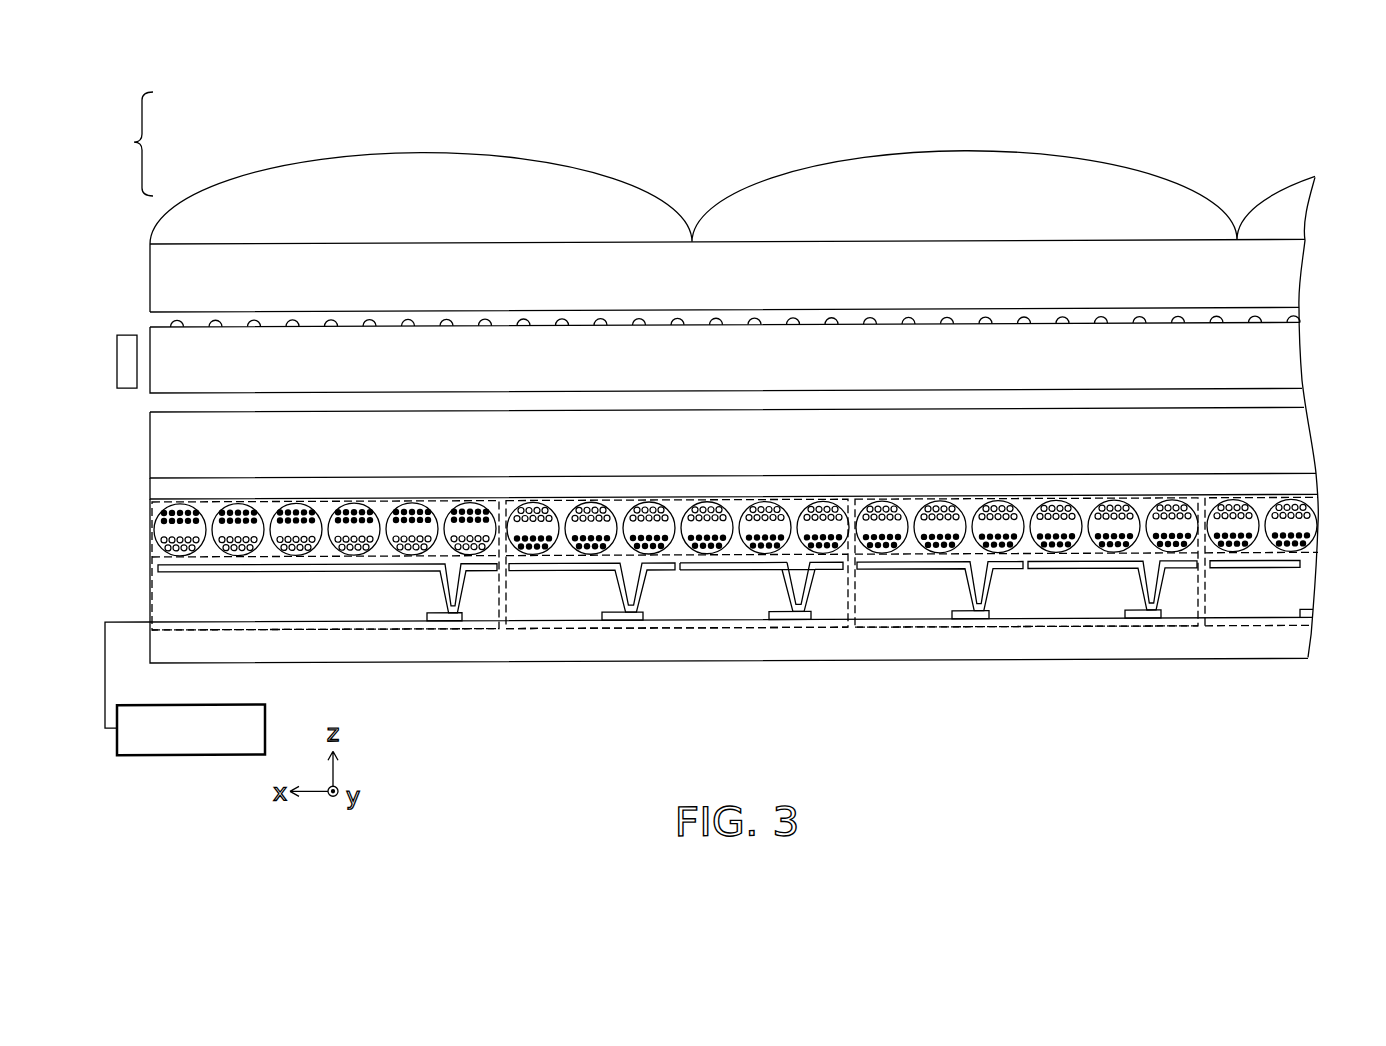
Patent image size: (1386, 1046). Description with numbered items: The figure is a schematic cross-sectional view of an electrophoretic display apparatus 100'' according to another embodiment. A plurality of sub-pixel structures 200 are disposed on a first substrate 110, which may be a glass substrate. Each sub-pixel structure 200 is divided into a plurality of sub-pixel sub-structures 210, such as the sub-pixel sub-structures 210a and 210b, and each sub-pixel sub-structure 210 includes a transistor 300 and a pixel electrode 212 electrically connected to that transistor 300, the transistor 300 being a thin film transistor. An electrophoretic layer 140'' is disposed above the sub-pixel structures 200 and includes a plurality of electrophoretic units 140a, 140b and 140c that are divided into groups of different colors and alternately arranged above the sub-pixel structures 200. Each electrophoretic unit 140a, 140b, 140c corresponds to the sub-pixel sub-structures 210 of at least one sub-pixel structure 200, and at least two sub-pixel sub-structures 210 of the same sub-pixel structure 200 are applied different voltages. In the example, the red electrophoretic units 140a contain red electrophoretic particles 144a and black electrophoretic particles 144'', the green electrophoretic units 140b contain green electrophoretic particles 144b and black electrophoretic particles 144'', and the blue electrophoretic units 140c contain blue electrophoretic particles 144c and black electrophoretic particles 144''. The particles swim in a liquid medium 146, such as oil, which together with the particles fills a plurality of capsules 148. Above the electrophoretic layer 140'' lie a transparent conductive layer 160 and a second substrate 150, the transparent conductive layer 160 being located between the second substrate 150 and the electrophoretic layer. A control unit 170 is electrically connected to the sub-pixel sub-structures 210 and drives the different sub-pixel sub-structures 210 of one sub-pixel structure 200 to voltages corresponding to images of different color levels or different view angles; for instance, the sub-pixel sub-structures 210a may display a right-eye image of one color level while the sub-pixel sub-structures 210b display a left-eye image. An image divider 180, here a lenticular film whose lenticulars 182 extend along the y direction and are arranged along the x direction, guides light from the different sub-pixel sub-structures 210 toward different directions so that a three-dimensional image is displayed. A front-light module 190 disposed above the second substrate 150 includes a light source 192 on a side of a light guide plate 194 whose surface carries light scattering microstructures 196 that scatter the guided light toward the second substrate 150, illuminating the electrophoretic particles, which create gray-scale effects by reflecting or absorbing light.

The electrophoretic display apparatus 100'' is at (1347, 701).
The first substrate 110 is at (1305, 640).
The electrophoretic layer 140'' is at (769, 563).
The red electrophoretic unit 140a is at (735, 590).
The green electrophoretic unit 140b is at (660, 578).
The blue electrophoretic unit 140c is at (1026, 577).
The black electrophoretic particles 144'' is at (741, 577).
The red electrophoretic particles 144a is at (370, 546).
The green electrophoretic particles 144b is at (533, 504).
The blue electrophoretic particles 144c is at (881, 506).
The medium 146 is at (593, 544).
The capsules 148 is at (556, 548).
The second substrate 150 is at (1304, 446).
The transparent conductive layer 160 is at (1307, 491).
The control unit 170 is at (207, 755).
The image divider 180 is at (1319, 224).
The lenticulars 182 is at (400, 167).
The front-light module 190 is at (120, 144).
The light source 192 is at (127, 388).
The light guide plate 194 is at (168, 344).
The light scattering microstructures 196 is at (177, 321).
The sub-pixel structures 200 is at (405, 631).
The sub-pixel sub-structures 210 is at (735, 653).
The sub-pixel sub-structures 210a is at (816, 640).
The sub-pixel sub-structures 210b is at (642, 643).
The pixel electrode 212 is at (757, 568).
The transistor 300 is at (787, 620).